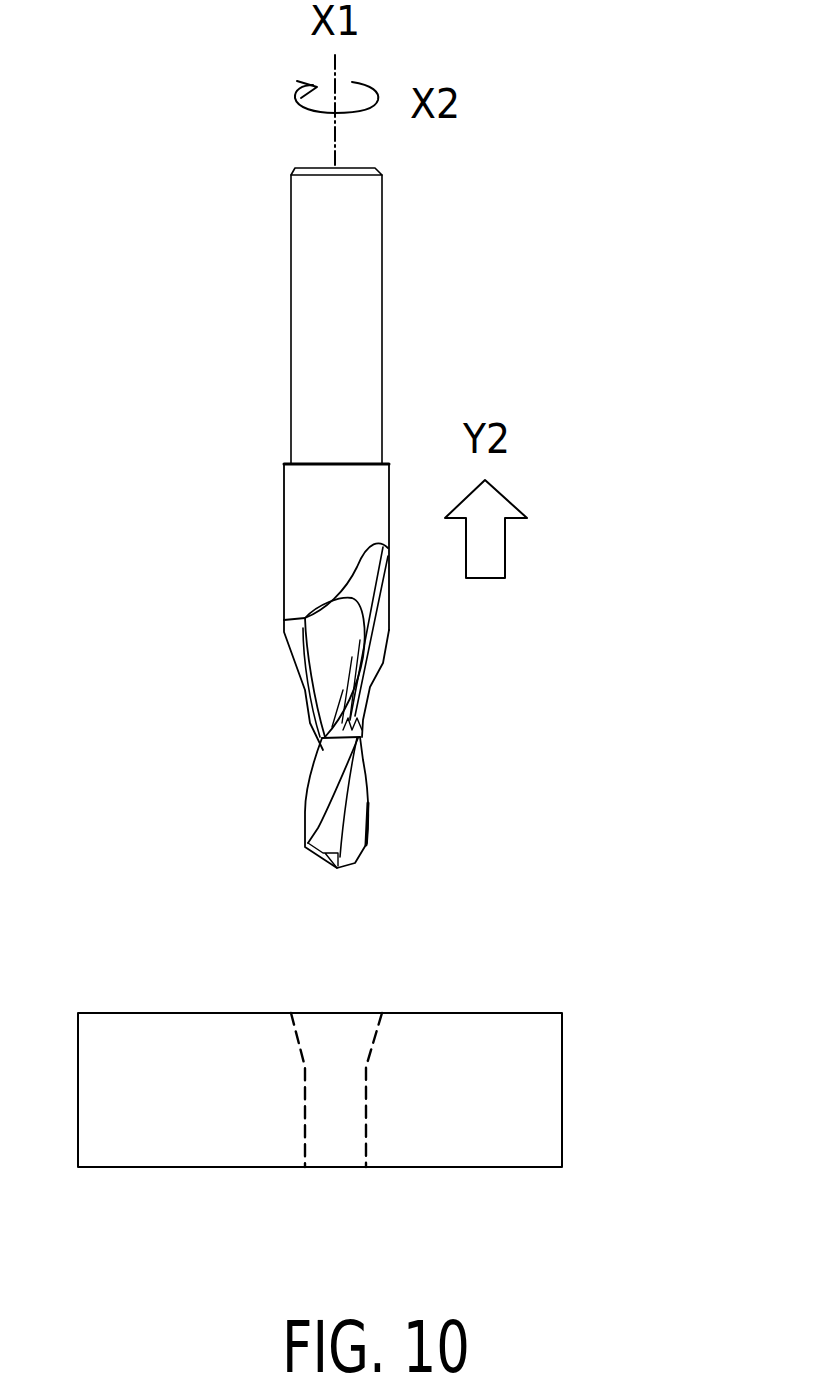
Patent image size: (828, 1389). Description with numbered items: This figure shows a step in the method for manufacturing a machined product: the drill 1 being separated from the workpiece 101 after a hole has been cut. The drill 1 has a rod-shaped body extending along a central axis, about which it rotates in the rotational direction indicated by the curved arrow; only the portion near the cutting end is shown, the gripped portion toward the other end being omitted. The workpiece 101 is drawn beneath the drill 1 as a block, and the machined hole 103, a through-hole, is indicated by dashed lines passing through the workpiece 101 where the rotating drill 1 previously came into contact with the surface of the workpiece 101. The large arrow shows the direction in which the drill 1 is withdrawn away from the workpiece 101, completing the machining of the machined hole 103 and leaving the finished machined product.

The drill 1 is at (243, 210).
The workpiece 101 is at (539, 1013).
The machined hole 103 is at (366, 1117).